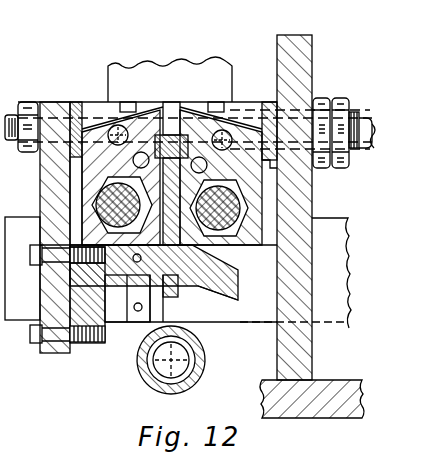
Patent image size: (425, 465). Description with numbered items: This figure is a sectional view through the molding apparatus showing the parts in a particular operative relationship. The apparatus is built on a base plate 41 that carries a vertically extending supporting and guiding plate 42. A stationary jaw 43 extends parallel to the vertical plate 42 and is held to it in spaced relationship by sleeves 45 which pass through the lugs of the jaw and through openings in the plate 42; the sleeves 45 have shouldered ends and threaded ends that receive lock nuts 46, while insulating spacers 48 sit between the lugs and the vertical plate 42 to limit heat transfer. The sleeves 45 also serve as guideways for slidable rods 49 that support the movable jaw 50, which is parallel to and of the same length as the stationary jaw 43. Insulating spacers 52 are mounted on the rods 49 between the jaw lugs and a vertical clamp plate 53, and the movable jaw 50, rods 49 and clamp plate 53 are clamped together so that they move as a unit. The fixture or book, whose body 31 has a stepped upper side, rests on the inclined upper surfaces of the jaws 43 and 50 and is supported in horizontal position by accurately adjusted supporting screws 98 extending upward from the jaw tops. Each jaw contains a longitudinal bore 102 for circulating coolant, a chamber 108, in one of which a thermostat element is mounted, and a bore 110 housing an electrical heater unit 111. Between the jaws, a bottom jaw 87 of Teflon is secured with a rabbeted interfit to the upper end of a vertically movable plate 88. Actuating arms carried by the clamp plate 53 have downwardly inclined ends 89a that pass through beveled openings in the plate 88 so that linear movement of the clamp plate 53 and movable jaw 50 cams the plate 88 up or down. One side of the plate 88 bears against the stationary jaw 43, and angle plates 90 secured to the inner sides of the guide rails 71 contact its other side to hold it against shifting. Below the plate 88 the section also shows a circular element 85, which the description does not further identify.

The body portion 31 is at (150, 64).
The base plate 41 is at (328, 402).
The supporting and guiding plate 42 is at (322, 44).
The stationary jaw 43 is at (265, 172).
The sleeves 45 is at (366, 116).
The lock nuts 46 is at (322, 98).
The insulating spacers 48 is at (268, 101).
The slidable rods 49 is at (374, 150).
The movable jaw 50 is at (78, 176).
The insulating spacers 52 is at (90, 84).
The clamp plate 53 is at (51, 100).
The guide rails 71 is at (345, 328).
The shaft 85 is at (198, 355).
The bottom jaw 87 is at (179, 92).
The vertically movable plate 88 is at (158, 271).
The downwardly inclined ends 89a is at (262, 296).
The angle plates 90 is at (152, 323).
The supporting screws 98 is at (128, 102).
The bores 102 is at (90, 158).
The chamber or bore 108 is at (133, 166).
The bore or chamber 110 is at (100, 228).
The electrical heater units 111 is at (88, 198).